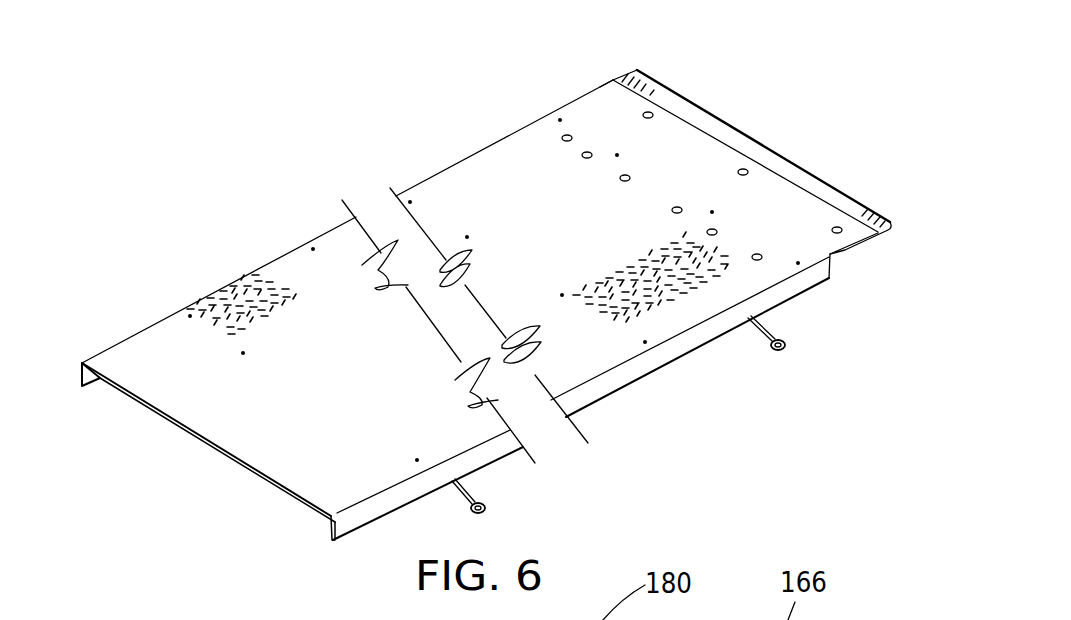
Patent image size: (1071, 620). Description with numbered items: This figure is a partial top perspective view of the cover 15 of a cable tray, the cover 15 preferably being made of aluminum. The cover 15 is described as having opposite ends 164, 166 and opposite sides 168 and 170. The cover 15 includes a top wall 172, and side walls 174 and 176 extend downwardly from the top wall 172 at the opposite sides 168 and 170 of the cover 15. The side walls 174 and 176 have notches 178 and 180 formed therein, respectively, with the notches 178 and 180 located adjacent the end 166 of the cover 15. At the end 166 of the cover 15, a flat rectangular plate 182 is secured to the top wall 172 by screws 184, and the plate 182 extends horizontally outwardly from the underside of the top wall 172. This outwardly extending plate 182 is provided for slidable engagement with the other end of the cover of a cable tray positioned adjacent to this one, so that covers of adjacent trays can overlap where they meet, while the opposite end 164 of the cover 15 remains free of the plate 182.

The cover 15 is at (331, 160).
The end 164 is at (225, 465).
The end 166 is at (752, 133).
The side 168 is at (248, 253).
The side 170 is at (630, 412).
The top wall 172 is at (552, 236).
The side wall 174 is at (77, 372).
The side wall 176 is at (327, 533).
The notch 178 is at (600, 82).
The notch 180 is at (833, 263).
The flat rectangular plate 182 is at (830, 198).
The screws 184 is at (758, 168).